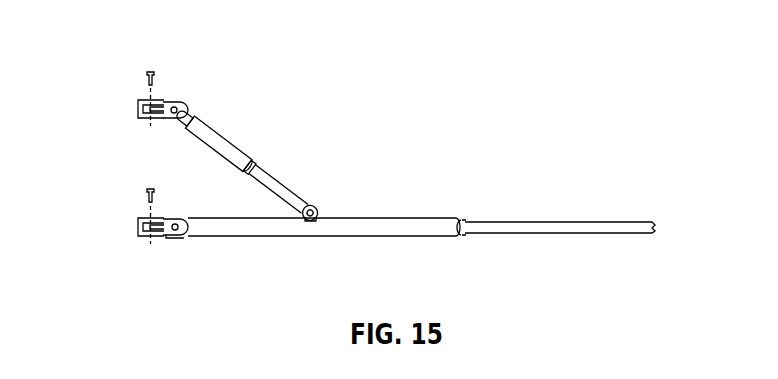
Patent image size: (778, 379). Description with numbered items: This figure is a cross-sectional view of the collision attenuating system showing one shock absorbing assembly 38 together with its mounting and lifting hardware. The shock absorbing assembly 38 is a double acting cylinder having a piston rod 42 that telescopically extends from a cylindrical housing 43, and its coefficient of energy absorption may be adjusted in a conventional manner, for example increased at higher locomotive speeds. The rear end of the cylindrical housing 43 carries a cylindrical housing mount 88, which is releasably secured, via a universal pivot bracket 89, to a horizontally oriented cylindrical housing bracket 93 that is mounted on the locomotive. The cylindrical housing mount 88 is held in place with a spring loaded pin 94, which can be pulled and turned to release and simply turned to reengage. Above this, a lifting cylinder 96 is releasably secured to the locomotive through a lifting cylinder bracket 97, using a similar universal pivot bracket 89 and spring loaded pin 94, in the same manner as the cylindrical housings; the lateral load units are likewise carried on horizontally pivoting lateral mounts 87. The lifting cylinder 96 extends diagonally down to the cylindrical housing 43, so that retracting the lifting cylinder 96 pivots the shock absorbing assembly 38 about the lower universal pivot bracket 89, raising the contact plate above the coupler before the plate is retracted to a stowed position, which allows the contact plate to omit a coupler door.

The shock absorbing assembly 38 is at (421, 168).
The piston rod 42 is at (583, 225).
The cylindrical housing 43 is at (357, 216).
The lateral mount 87 is at (178, 121).
The cylindrical housing mount 88 is at (164, 237).
The universal pivot bracket 89 is at (183, 99).
The cylindrical housing bracket 93 is at (134, 230).
The spring loaded pin 94 is at (141, 77).
The lifting cylinder 96 is at (249, 142).
The lifting cylinder bracket 97 is at (131, 112).